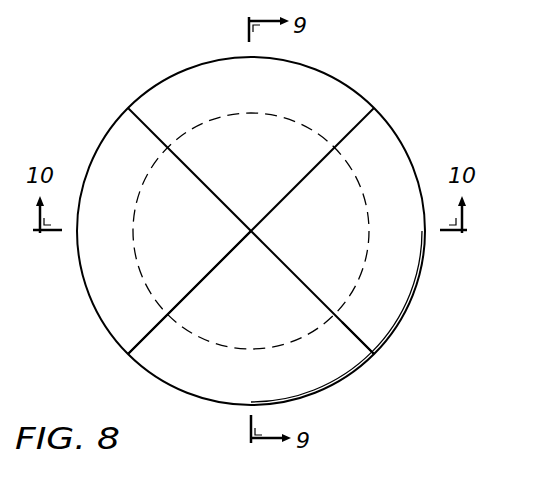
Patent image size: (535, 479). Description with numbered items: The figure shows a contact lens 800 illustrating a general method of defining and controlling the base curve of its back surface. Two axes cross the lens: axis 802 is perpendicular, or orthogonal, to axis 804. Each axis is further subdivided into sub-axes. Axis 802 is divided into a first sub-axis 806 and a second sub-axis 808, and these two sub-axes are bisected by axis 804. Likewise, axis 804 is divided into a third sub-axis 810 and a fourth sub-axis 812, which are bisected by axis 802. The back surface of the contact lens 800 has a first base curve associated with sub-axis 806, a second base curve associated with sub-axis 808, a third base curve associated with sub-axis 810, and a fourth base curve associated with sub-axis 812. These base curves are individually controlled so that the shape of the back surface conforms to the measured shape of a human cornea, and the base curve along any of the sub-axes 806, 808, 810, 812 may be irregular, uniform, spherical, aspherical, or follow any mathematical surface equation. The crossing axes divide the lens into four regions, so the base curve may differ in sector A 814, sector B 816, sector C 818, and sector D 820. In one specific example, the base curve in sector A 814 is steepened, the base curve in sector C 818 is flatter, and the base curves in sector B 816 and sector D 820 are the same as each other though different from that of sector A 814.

The contact lens 800 is at (94, 108).
The axis 802 is at (202, 182).
The axis 804 is at (200, 282).
The first sub-axis 806 is at (150, 118).
The second sub-axis 808 is at (357, 330).
The third sub-axis 810 is at (353, 128).
The fourth sub-axis 812 is at (140, 328).
The sector A 814 is at (287, 150).
The sector B 816 is at (165, 245).
The sector C 818 is at (337, 233).
The sector D 820 is at (285, 318).